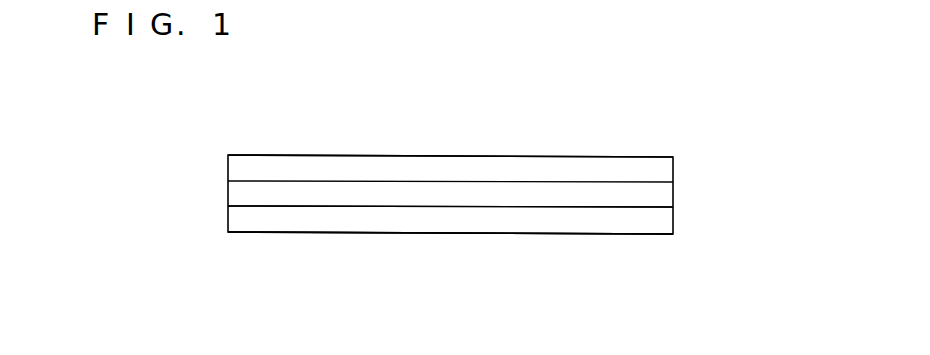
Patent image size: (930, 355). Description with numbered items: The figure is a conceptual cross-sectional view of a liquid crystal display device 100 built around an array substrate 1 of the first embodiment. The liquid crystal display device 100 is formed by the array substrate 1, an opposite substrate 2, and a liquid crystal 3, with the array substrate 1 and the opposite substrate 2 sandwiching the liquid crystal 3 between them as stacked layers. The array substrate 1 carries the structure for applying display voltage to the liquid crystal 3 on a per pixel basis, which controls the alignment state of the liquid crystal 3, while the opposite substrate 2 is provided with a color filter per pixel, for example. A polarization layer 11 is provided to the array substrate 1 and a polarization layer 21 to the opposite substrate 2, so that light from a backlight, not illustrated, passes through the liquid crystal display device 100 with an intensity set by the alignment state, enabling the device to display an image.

The liquid crystal display device 100 is at (602, 152).
The array substrate 1 is at (558, 222).
The polarization layer 11 is at (613, 235).
The opposite substrate 2 is at (453, 159).
The polarization layer 21 is at (495, 157).
The liquid crystal 3 is at (457, 197).